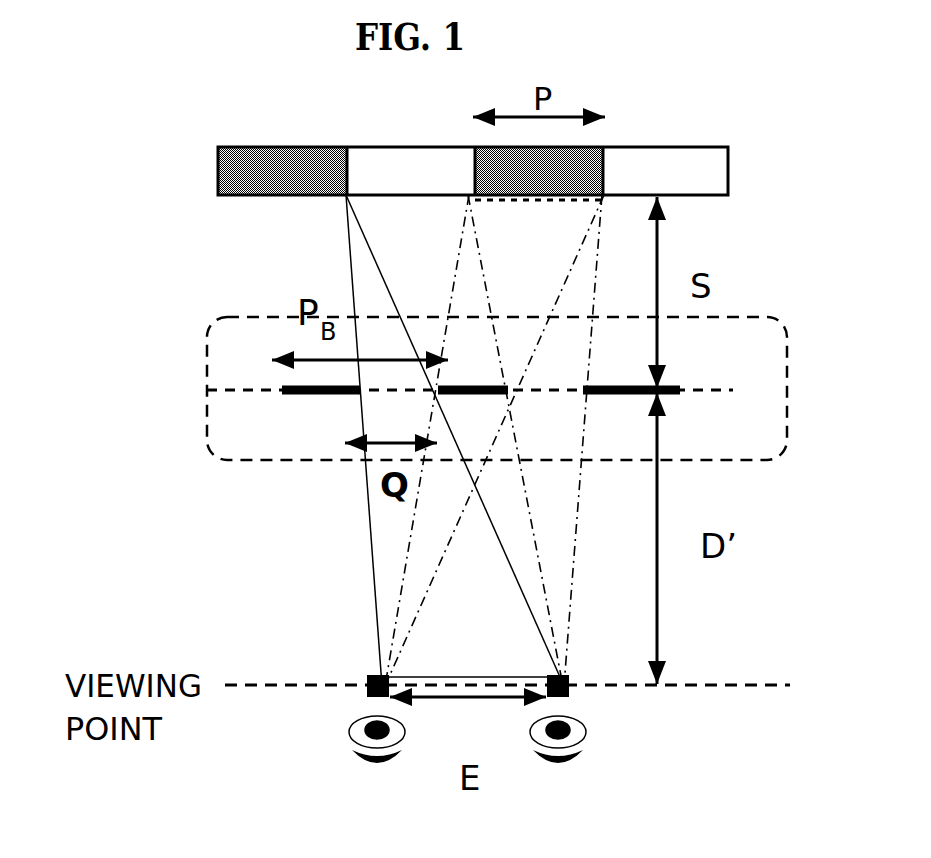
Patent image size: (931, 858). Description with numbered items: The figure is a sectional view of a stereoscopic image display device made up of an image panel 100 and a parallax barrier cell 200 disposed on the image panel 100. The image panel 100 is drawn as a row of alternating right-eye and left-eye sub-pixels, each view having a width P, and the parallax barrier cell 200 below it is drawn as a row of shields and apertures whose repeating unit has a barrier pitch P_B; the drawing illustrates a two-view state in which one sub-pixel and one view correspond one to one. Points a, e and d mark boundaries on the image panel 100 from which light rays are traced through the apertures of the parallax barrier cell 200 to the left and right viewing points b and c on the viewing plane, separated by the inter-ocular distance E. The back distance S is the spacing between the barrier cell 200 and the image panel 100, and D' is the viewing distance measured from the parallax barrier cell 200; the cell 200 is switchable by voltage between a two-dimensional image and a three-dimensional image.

The image panel 100 is at (429, 173).
The parallax barrier cell 200 is at (458, 388).
The pixel boundary point a on display panel a is at (434, 440).
The left viewing point b is at (370, 682).
The right viewing point c is at (550, 682).
The pixel boundary point d on display panel d is at (600, 198).
The pixel boundary point e on display panel e is at (470, 198).